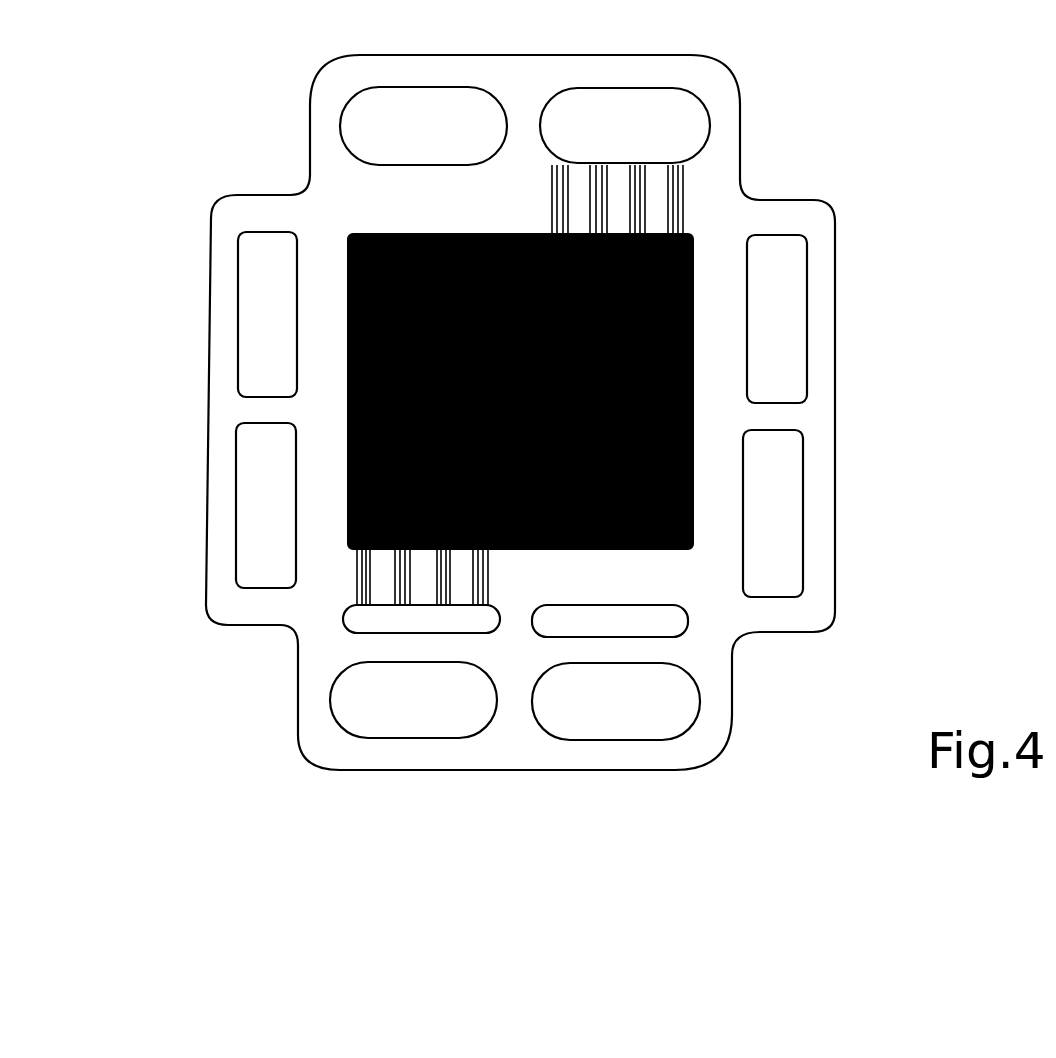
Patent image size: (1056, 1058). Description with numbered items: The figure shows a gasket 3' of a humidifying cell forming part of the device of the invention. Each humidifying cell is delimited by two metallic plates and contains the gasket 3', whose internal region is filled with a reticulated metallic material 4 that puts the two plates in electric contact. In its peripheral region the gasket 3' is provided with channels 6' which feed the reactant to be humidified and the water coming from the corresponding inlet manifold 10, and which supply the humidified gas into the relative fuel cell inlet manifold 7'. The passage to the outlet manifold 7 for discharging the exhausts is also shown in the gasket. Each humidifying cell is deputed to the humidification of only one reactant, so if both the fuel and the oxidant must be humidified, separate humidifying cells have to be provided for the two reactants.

The gasket 3' is at (470, 412).
The reticulated metallic material 4 is at (685, 365).
The channels 6' is at (555, 395).
The outlet manifold 7 is at (344, 719).
The fuel cell inlet manifold 7' is at (728, 108).
The inlet manifold 10 is at (450, 621).